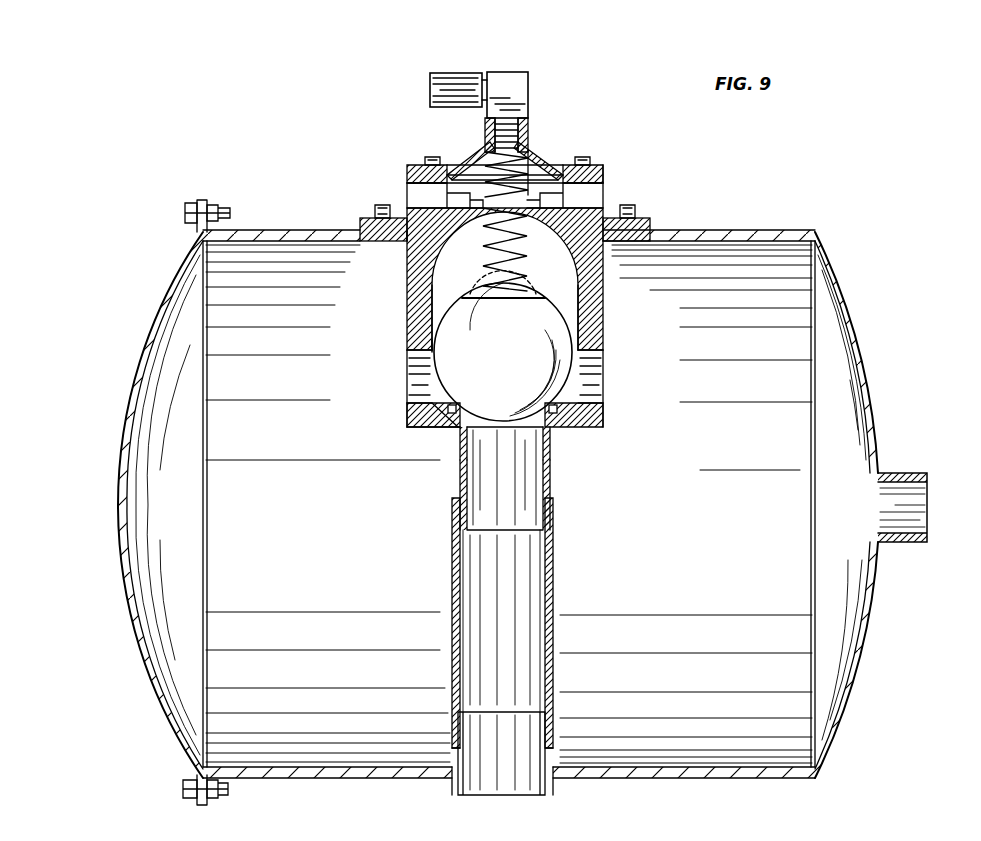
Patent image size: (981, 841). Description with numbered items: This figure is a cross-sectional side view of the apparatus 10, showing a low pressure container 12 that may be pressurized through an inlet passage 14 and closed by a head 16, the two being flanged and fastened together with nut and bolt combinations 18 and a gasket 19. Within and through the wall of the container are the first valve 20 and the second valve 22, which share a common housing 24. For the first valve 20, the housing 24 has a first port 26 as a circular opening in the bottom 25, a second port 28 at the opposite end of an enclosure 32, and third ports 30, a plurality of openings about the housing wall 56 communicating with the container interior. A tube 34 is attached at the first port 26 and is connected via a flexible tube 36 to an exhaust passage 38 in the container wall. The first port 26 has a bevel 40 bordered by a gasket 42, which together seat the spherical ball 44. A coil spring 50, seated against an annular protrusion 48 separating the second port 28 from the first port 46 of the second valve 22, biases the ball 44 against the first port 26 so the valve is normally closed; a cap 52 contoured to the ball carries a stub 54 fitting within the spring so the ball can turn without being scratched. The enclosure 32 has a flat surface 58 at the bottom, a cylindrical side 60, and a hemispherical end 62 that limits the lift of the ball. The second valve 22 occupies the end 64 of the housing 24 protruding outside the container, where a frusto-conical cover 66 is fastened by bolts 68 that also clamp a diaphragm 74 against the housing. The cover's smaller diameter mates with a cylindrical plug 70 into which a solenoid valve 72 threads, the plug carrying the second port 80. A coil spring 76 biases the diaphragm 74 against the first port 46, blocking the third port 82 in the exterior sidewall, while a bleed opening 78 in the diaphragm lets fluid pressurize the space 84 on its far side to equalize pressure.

The apparatus 10 is at (622, 152).
The container 12 is at (862, 298).
The inlet passage 14 is at (912, 473).
The head 16 is at (112, 518).
The nut and bolt combinations 18 is at (215, 205).
The gasket 19 is at (202, 200).
The first valve 20 is at (640, 297).
The second valve 22 is at (552, 128).
The housing 24 is at (407, 297).
The bottom 25 is at (422, 432).
The first port 26 is at (552, 438).
The second port 28 is at (410, 240).
The third ports 30 is at (603, 360).
The enclosure 32 is at (610, 218).
The tube 34 is at (551, 463).
The flexible tube 36 is at (553, 606).
The exhaust passage 38 is at (553, 755).
The bevel 40 is at (603, 414).
The gasket 42 is at (557, 408).
The spherical ball 44 is at (565, 330).
The first port 46 is at (560, 196).
The annular protrusion 48 is at (455, 196).
The coil spring 50 is at (432, 310).
The cap 52 is at (545, 298).
The stub 54 is at (540, 288).
The wall 56 is at (430, 310).
The flat surface 58 is at (432, 403).
The cylindrical side 60 is at (430, 318).
The hemispherical end 62 is at (432, 285).
The end 64 is at (420, 165).
The cover 66 is at (470, 160).
The bolts 68 is at (430, 162).
The cylindrical plug 70 is at (533, 135).
The solenoid valve 72 is at (508, 72).
The diaphragm 74 is at (550, 170).
The coil spring 76 is at (540, 150).
The bleed opening 78 is at (520, 180).
The second port 80 is at (506, 118).
The third port 82 is at (603, 190).
The space 84 is at (485, 165).